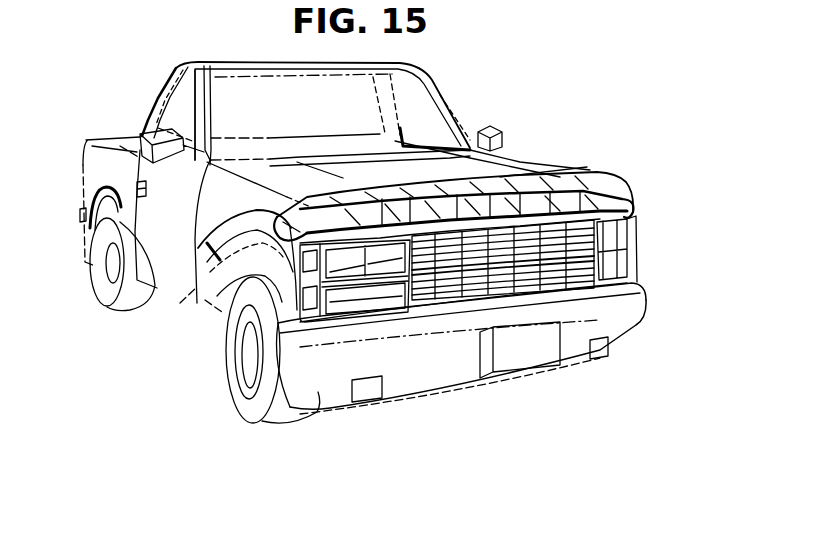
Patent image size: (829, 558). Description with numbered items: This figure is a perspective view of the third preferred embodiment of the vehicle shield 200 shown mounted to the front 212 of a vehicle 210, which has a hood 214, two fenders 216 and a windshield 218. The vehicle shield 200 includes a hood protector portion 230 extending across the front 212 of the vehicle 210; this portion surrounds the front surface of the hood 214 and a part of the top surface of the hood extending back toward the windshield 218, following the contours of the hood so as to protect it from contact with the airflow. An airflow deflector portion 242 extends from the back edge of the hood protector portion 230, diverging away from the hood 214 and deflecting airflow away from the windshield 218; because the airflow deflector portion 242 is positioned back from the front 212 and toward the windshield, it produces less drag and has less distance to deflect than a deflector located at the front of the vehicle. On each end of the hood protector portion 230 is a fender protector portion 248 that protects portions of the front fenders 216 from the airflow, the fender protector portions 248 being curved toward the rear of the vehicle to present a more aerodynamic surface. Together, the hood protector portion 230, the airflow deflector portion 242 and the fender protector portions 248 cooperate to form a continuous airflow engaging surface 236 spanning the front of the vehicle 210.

The vehicle shield 200 is at (390, 238).
The vehicle 210 is at (157, 93).
The front 212 is at (612, 303).
The hood 214 is at (506, 152).
The fenders 216 is at (184, 296).
The windshield 218 is at (413, 112).
The hood protector portion 230 is at (449, 240).
The continuous airflow engaging surface 236 is at (412, 245).
The airflow deflector portion 242 is at (556, 177).
The fender protector portion 248 is at (641, 207).